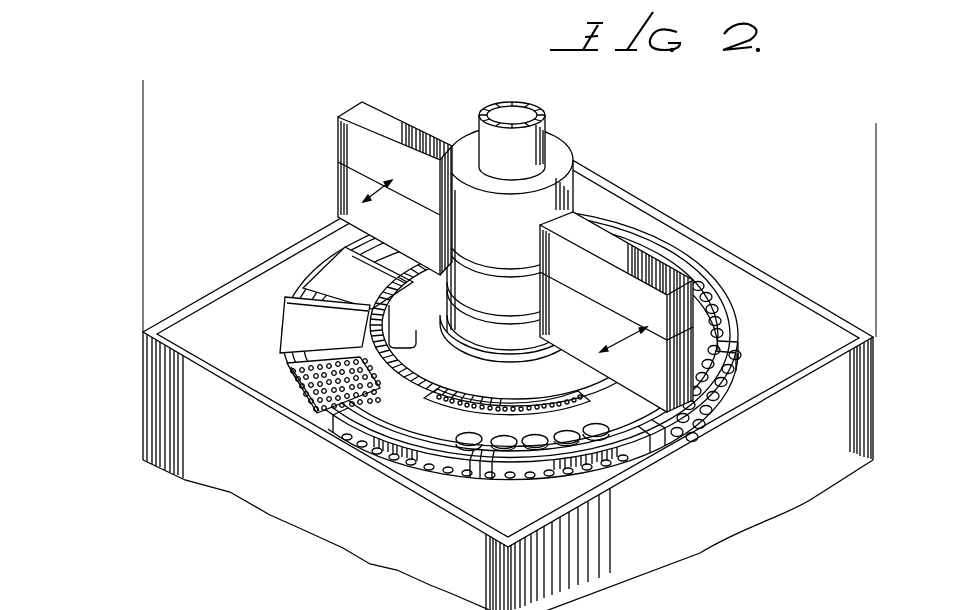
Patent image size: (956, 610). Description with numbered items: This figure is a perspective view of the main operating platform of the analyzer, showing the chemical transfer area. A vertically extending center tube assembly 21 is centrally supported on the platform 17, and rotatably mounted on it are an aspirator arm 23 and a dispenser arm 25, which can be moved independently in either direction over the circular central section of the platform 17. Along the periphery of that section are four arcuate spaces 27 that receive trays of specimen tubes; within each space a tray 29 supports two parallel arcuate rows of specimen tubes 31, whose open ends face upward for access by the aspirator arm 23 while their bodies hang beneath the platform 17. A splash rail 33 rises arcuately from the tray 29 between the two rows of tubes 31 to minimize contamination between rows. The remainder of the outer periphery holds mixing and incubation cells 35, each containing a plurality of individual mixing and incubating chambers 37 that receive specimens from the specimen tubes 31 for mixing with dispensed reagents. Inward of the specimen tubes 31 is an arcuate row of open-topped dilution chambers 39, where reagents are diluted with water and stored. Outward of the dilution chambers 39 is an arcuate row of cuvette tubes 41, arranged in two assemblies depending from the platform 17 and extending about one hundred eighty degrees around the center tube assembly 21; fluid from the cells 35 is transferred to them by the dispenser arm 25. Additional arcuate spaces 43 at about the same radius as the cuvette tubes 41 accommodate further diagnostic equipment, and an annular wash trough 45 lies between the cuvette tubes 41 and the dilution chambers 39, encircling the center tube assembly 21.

The platform 17 is at (205, 308).
The center tube assembly 21 is at (580, 152).
The aspirator arm 23 is at (623, 252).
The dispenser arm 25 is at (403, 128).
The arcuate spaces 27 is at (720, 316).
The tray 29 is at (705, 277).
The specimen tubes 31 is at (733, 380).
The splash rail 33 is at (673, 258).
The mixing and incubation cells 35 is at (298, 313).
The mixing and incubating chambers 37 is at (317, 413).
The dilution chambers 39 is at (456, 436).
The cuvette tubes 41 is at (428, 382).
The arcuate spaces 43 is at (390, 333).
The wash trough 45 is at (430, 408).